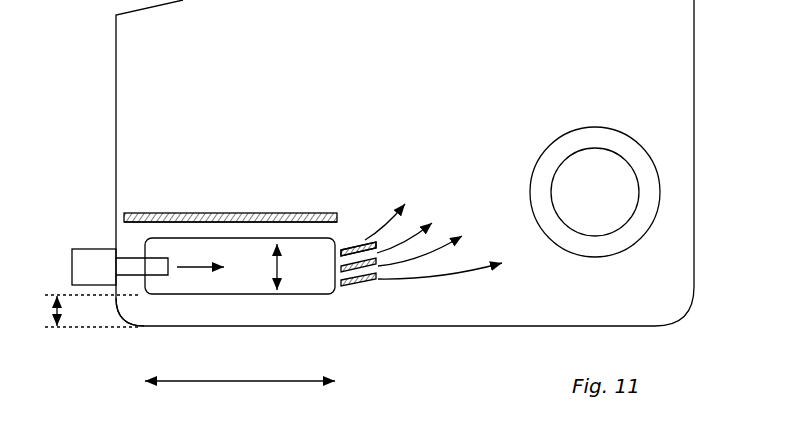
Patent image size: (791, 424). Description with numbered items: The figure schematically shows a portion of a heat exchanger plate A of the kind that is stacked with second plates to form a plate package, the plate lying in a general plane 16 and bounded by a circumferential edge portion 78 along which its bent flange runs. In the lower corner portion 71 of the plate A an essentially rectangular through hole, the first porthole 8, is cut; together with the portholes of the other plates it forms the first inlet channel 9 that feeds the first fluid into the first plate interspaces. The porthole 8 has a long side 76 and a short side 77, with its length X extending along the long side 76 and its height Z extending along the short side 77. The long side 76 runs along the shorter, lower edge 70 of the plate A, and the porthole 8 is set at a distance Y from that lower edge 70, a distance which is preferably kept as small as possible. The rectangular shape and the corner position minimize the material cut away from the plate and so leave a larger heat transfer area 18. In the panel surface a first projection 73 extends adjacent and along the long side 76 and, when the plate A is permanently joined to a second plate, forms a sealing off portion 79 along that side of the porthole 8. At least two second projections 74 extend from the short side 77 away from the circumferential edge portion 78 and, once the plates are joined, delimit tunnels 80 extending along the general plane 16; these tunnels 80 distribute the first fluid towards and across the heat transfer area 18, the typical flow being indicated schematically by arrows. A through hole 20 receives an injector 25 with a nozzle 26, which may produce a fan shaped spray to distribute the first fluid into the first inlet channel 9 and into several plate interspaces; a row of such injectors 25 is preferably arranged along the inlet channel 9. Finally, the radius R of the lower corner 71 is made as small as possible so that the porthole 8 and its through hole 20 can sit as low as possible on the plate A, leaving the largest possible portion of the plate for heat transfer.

The first porthole 8 is at (615, 190).
The first inlet channel 9 is at (192, 285).
The general plane 16 is at (393, 189).
The heat transfer area 18 is at (137, 84).
The through hole 20 is at (113, 270).
The injector 25 is at (145, 258).
The nozzle 26 is at (167, 262).
The lower edge 70 is at (446, 327).
The lower corner portion 71 is at (112, 298).
The first projection 73 is at (270, 213).
The second projections 74 is at (388, 212).
The long side 76 is at (205, 236).
The short side 77 is at (346, 248).
The circumferential edge portion 78 is at (694, 223).
The sealing off portion 79 is at (243, 213).
The tunnels 80 is at (356, 245).
The heat exchanger plate A is at (668, 25).
The length X is at (240, 371).
The distance Y is at (86, 311).
The height Z is at (292, 267).
The radius R is at (124, 312).